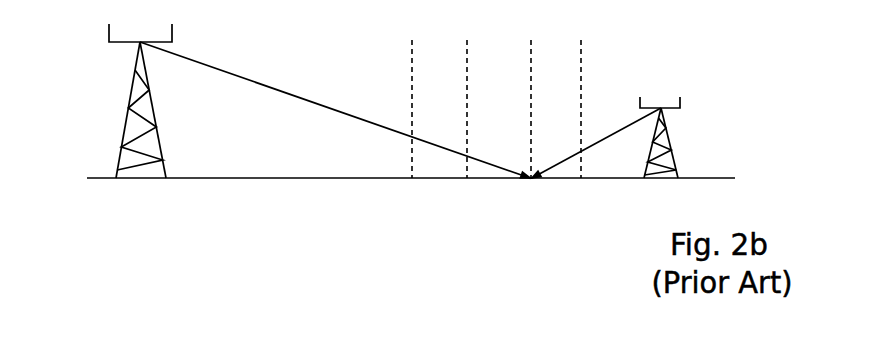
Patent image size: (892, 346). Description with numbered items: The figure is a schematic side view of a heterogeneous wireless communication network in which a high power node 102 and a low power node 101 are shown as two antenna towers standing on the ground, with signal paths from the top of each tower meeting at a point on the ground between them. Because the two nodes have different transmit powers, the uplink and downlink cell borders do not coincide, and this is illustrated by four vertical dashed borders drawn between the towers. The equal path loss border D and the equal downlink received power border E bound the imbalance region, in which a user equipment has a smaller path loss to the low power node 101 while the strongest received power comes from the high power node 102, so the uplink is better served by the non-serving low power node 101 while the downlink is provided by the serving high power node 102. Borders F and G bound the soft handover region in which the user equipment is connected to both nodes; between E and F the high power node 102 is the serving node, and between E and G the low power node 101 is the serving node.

The low power node (LPN) 101 is at (665, 126).
The high power node (HPN) 102 is at (132, 90).
The equal path loss border D is at (409, 126).
The equal downlink received power border E is at (531, 126).
The soft handover region border F is at (464, 126).
The soft handover region border G is at (584, 126).